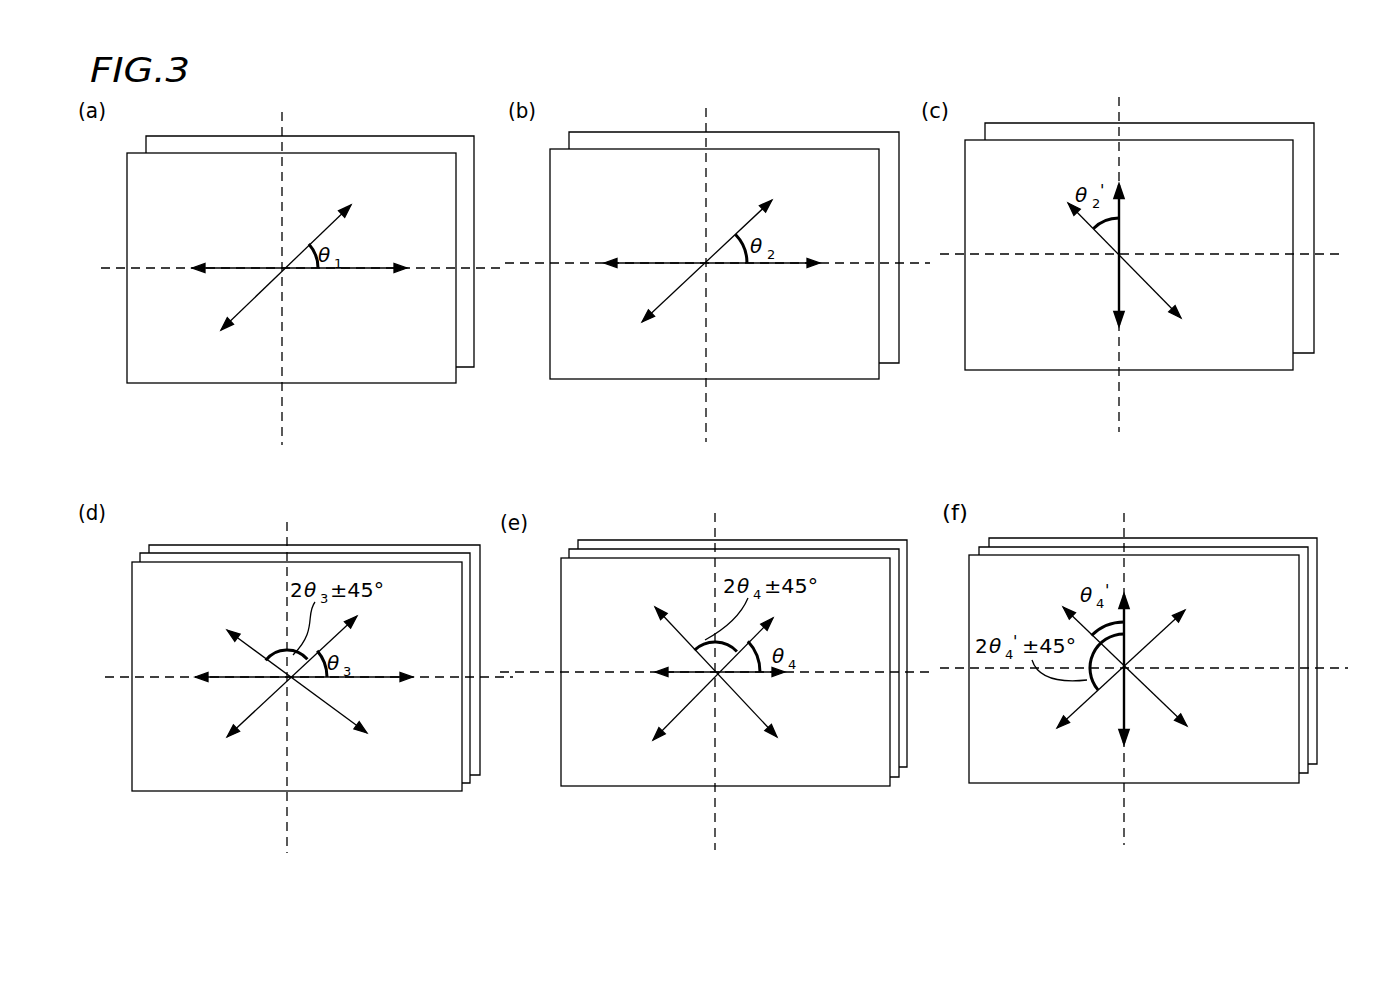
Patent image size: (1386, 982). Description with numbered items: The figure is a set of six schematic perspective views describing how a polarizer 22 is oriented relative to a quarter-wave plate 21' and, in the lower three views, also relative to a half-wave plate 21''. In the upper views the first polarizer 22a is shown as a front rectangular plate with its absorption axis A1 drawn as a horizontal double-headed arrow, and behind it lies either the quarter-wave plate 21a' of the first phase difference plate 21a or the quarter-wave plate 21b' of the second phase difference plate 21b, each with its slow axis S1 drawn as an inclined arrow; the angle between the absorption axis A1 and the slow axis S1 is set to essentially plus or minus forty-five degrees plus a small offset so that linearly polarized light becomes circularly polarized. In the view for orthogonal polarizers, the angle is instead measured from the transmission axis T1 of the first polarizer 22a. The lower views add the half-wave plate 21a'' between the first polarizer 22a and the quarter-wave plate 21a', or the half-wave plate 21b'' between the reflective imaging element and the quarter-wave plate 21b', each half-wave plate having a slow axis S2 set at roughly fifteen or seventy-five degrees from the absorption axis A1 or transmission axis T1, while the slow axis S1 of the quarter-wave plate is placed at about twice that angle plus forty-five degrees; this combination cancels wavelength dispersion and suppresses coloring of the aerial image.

The first polarizer 22a is at (432, 370).
The polarizer 22 is at (713, 503).
The λ/4 plate 21a' is at (358, 471).
The λ/2 plate 21a'' is at (346, 710).
The λ/4 plate 21b' is at (977, 482).
The λ/2 plate 21b'' is at (961, 708).
The first phase difference plate 21a is at (355, 501).
The second phase difference plate 21b is at (977, 496).
The λ/4 plate 21' is at (358, 471).
The λ/2 plate 21'' is at (346, 710).
The absorption axis A1 is at (386, 270).
The transmission axis T1 is at (1122, 199).
The slow axis S1 is at (340, 221).
The slow axis S2 is at (342, 632).